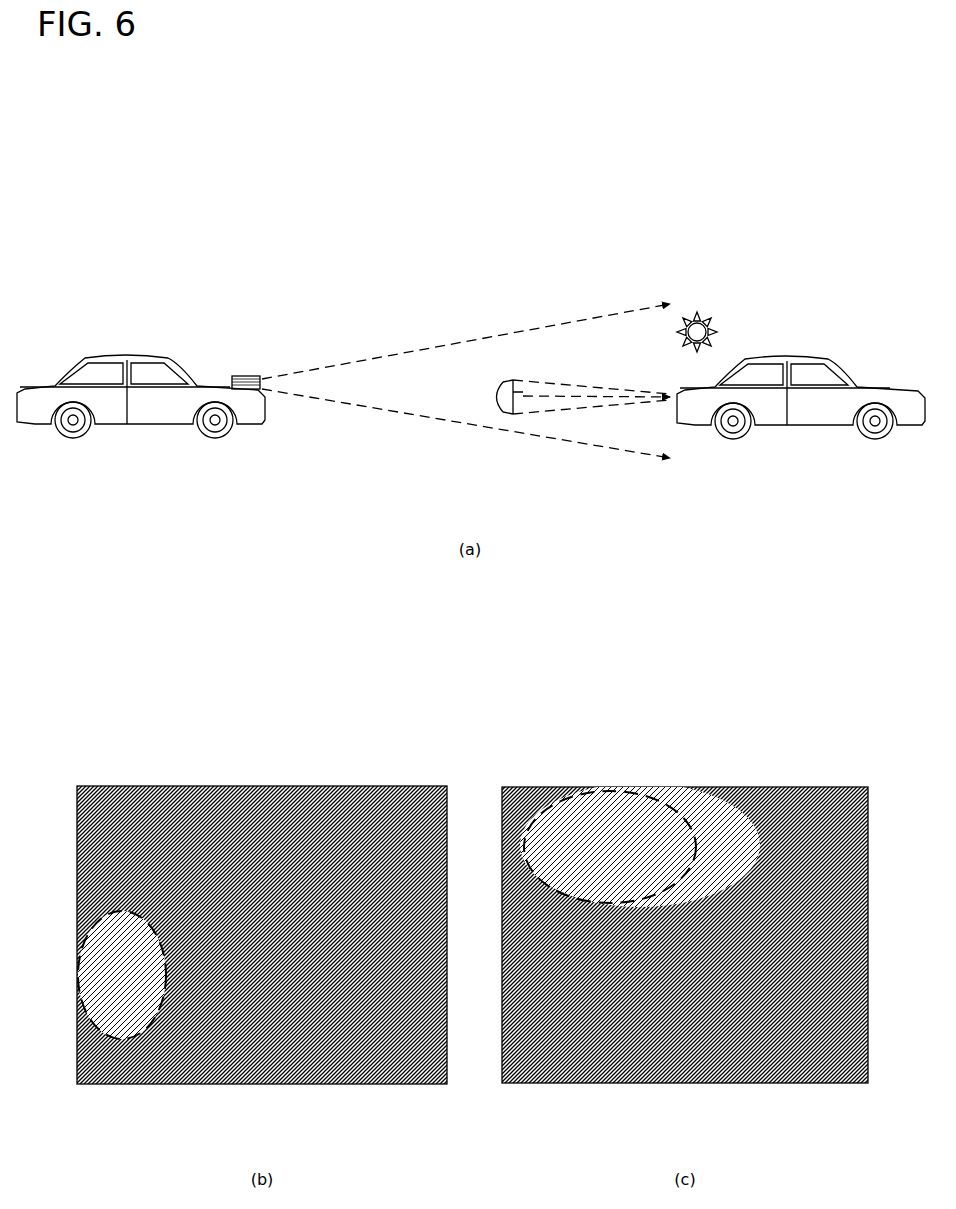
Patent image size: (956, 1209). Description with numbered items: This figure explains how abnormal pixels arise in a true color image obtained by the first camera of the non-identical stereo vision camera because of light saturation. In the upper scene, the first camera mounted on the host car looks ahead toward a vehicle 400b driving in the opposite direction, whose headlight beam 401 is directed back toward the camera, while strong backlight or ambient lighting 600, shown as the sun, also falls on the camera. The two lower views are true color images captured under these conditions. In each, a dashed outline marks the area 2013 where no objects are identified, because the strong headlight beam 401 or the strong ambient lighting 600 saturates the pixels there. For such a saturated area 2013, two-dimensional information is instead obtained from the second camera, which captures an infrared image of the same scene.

The ambient lighting 600 is at (710, 308).
The headlight beam 401 is at (566, 416).
The vehicle driving in the opposite direction 400b is at (801, 440).
The area where no objects are identified 2013 is at (120, 1050).